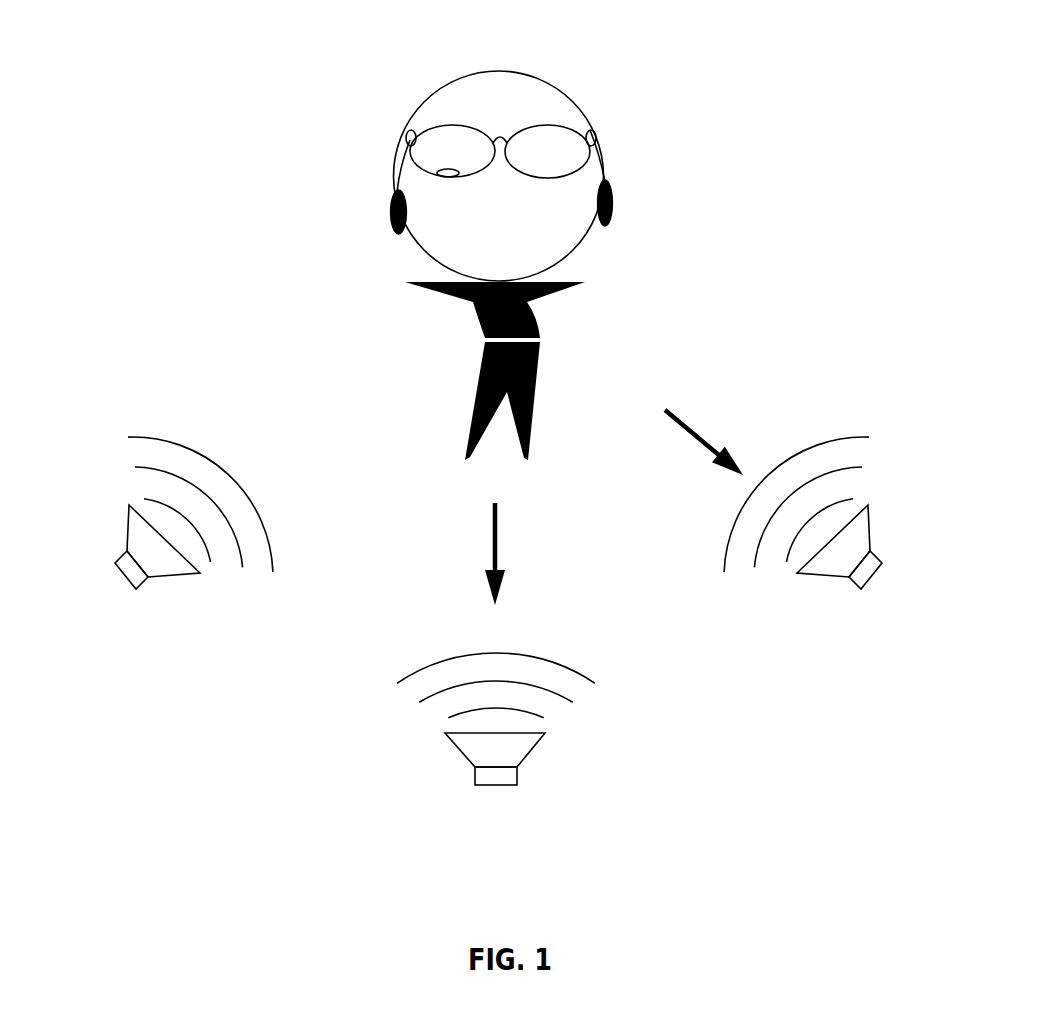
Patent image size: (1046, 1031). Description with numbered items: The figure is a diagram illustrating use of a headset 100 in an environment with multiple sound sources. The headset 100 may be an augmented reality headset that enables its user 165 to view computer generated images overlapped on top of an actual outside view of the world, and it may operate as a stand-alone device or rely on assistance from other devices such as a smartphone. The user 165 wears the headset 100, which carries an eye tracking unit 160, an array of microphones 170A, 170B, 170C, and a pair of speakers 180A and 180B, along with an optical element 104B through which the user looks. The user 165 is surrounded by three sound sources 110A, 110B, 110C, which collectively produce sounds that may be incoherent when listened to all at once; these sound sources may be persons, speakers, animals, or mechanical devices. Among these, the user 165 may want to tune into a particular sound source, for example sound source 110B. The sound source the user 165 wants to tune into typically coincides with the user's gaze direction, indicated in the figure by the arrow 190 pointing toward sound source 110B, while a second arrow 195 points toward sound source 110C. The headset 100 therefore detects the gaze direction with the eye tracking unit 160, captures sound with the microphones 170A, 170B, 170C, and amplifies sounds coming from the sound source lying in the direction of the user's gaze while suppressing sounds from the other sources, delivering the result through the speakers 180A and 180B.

The headset 100 is at (670, 142).
The microphone 170A is at (410, 138).
The microphone 170B is at (496, 139).
The lens 104B is at (557, 135).
The microphone 170C is at (592, 122).
The eye tracking unit 160 is at (450, 178).
The user 165 is at (470, 392).
The speaker 180A is at (392, 218).
The speaker 180B is at (612, 212).
The sound direction arrow 190 is at (521, 554).
The sound direction arrow 195 is at (705, 434).
The sound source 110A is at (159, 513).
The sound source 110B is at (496, 745).
The sound source 110C is at (839, 513).